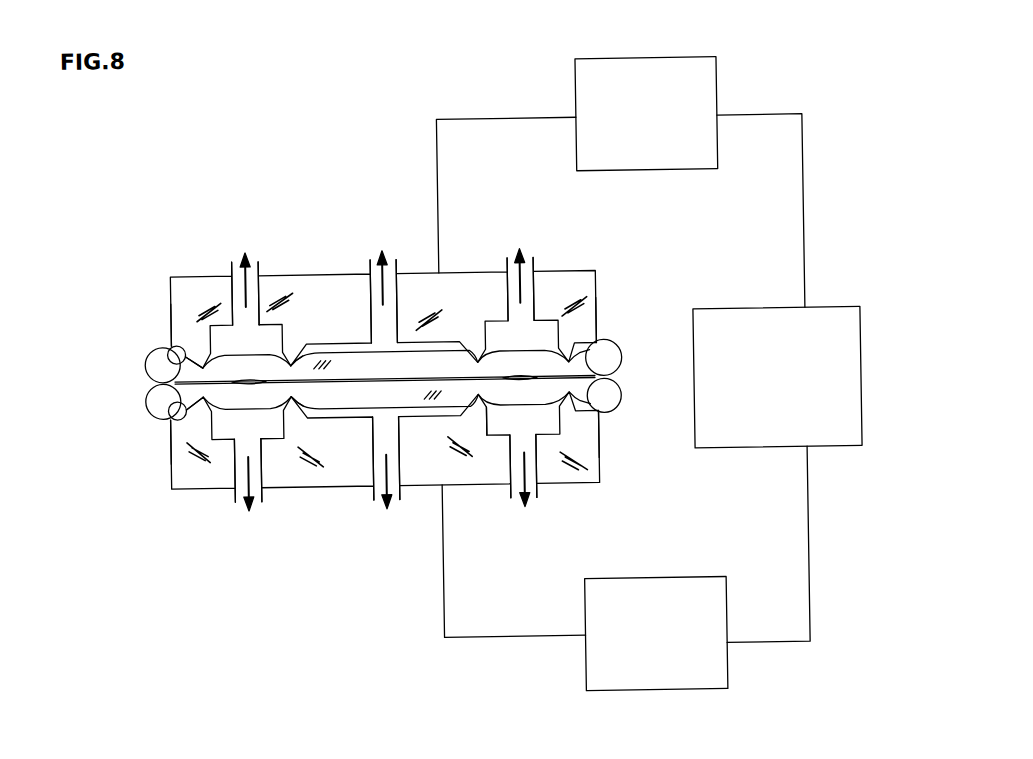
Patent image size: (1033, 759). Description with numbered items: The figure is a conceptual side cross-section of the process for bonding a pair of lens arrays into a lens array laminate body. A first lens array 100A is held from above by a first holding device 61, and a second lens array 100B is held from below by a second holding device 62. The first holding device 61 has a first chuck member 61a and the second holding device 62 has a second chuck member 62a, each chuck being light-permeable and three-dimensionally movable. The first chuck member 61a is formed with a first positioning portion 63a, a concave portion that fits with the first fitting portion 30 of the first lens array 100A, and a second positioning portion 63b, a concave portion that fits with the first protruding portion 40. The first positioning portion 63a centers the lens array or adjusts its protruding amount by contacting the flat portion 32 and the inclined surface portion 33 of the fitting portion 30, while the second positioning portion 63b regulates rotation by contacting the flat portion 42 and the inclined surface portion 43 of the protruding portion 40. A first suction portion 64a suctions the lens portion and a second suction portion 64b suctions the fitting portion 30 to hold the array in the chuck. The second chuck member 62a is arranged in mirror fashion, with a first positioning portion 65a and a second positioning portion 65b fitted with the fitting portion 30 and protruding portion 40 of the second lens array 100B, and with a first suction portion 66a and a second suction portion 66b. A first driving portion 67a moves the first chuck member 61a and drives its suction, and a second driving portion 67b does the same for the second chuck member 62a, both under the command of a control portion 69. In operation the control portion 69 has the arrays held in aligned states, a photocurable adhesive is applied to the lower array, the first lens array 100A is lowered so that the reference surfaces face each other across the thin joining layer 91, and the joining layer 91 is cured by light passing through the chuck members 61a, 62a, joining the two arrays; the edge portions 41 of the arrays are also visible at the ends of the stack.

The first fitting portion 30 is at (433, 358).
The flat portion 32 is at (338, 350).
The inclined surface portion 33 is at (300, 348).
The first protruding portion 40 is at (147, 358).
The edge bead portion 41 is at (147, 370).
The flat portion 42 is at (168, 343).
The inclined surface portion 43 is at (194, 343).
The first holding device 61 is at (380, 158).
The first chuck member 61a is at (574, 292).
The second holding device 62 is at (350, 584).
The second chuck member 62a is at (599, 450).
The first positioning portion 63a is at (296, 310).
The second positioning portion 63b is at (168, 346).
The first suction portion 64a is at (219, 337).
The second suction portion 64b is at (408, 340).
The first positioning portion 65a is at (309, 453).
The second positioning portion 65b is at (164, 406).
The first suction portion 66a is at (224, 422).
The second suction portion 66b is at (419, 450).
The first driving portion 67a is at (694, 104).
The second driving portion 67b is at (696, 666).
The control portion 69 is at (826, 341).
The joining layer 91 is at (489, 421).
The first lens array 100A is at (135, 340).
The second lens array 100B is at (134, 437).